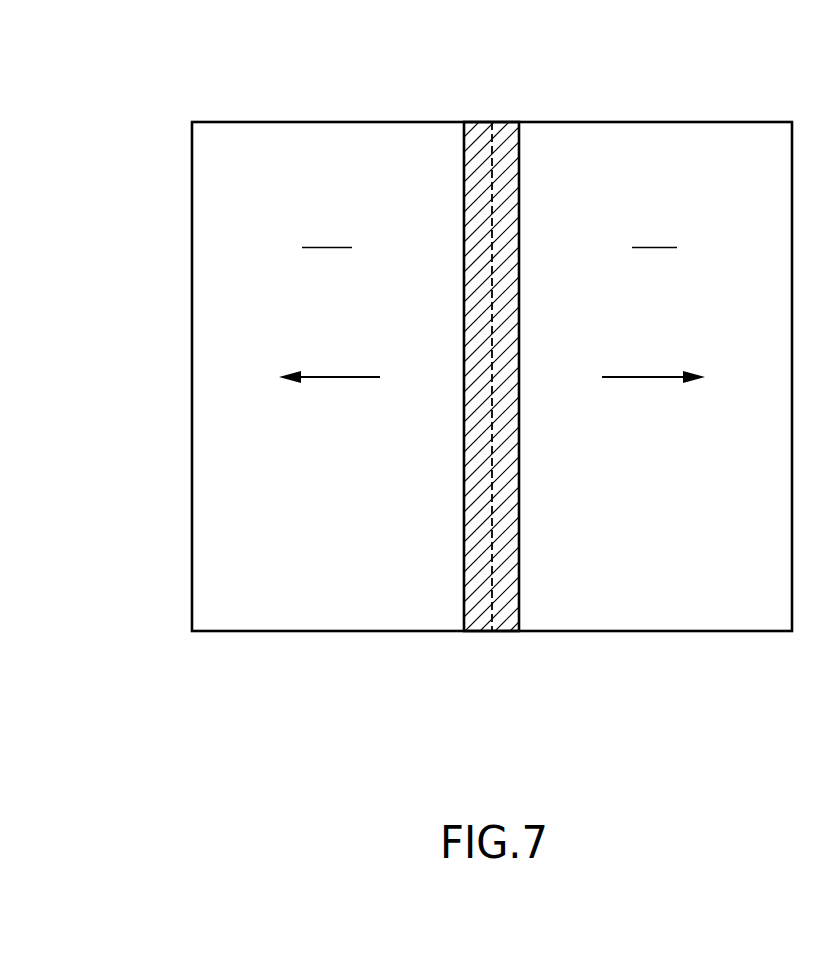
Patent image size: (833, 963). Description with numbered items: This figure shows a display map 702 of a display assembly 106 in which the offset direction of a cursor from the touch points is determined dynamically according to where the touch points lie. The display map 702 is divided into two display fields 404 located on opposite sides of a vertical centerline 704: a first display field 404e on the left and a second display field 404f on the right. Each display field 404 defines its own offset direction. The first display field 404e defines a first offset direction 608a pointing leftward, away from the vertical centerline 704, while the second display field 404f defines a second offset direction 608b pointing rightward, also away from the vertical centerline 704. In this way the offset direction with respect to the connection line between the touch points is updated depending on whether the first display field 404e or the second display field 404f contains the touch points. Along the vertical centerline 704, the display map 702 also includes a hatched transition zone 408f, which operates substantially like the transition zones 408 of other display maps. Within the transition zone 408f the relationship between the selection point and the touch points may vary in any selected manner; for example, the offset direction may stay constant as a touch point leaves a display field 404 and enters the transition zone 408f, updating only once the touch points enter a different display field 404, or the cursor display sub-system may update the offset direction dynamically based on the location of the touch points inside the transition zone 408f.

The display assembly 106 is at (172, 68).
The display map 702 is at (192, 127).
The display field 404 is at (203, 275).
The first display field 404e is at (327, 236).
The second display field 404f is at (655, 236).
The transition zone 408 is at (505, 327).
The transition zone 408f is at (480, 137).
The vertical centerline 704 is at (493, 160).
The first offset direction 608a is at (340, 380).
The second offset direction 608b is at (643, 380).